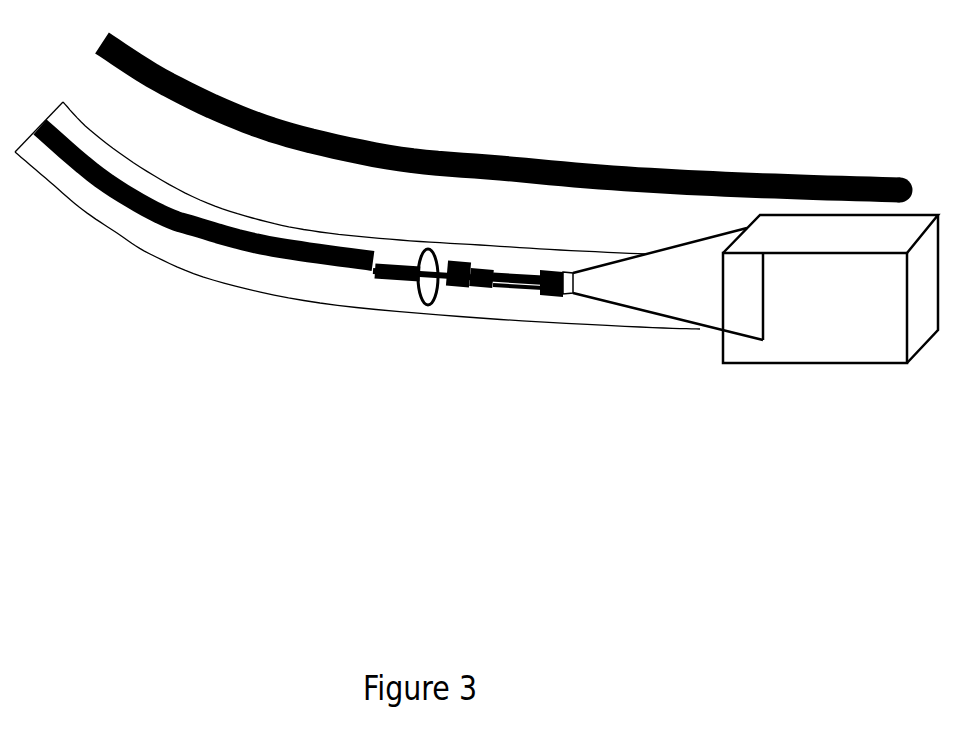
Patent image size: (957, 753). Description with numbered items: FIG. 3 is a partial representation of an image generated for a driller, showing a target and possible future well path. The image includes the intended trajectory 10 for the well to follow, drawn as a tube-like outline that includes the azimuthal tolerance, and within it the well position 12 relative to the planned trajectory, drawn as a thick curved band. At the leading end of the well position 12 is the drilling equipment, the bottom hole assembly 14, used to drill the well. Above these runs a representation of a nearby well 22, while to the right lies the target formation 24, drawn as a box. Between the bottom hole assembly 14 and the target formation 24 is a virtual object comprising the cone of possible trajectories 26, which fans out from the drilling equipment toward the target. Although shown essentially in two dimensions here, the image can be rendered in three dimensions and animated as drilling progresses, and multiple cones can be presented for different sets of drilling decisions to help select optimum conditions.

The intended trajectory 10 is at (81, 141).
The well position 12 is at (173, 248).
The drilling equipment (bottom hole assembly) 14 is at (483, 295).
The nearby well 22 is at (672, 158).
The target formation 24 is at (839, 375).
The cone of possible trajectories 26 is at (641, 324).